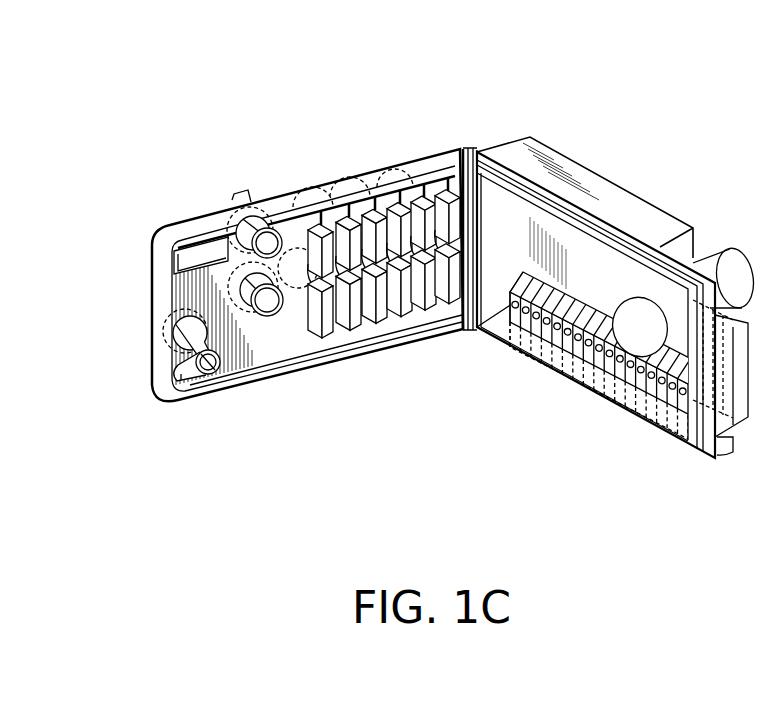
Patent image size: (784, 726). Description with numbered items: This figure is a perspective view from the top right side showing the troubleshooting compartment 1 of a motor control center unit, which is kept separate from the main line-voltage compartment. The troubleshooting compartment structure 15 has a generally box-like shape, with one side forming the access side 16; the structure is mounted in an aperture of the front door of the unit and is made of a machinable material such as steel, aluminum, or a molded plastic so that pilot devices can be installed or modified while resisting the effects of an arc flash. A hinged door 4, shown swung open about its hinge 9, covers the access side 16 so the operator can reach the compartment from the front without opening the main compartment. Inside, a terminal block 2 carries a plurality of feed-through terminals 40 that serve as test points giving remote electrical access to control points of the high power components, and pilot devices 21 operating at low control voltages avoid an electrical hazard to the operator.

The troubleshooting compartment 1 is at (238, 110).
The terminal block 2 is at (630, 384).
The hinged door 4 is at (180, 221).
The hinge 9 is at (459, 177).
The troubleshooting compartment structure 15 is at (598, 168).
The access side 16 is at (506, 224).
The pilot devices 21 is at (328, 323).
The feed-through terminals 40 is at (580, 352).